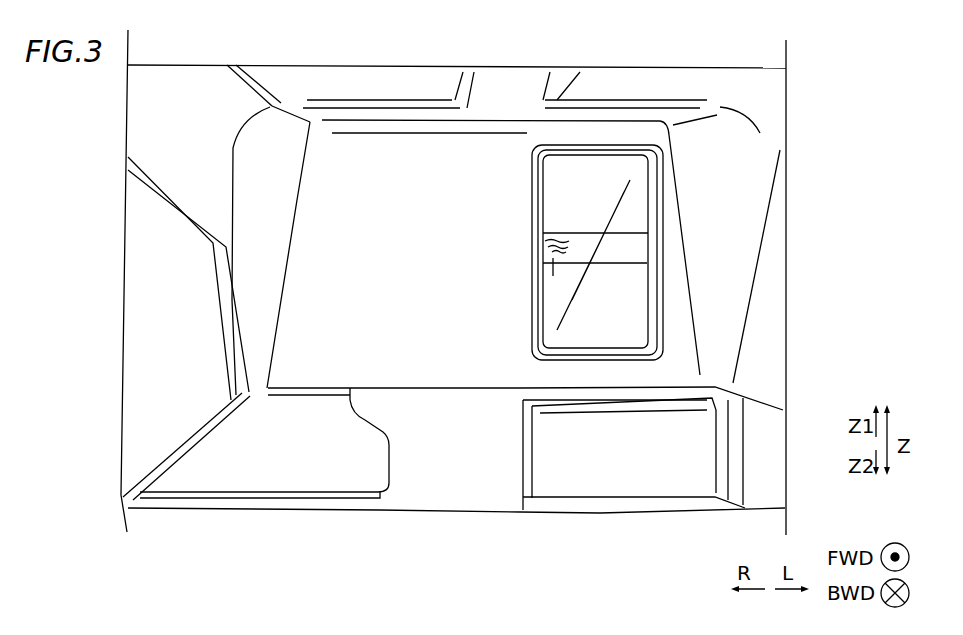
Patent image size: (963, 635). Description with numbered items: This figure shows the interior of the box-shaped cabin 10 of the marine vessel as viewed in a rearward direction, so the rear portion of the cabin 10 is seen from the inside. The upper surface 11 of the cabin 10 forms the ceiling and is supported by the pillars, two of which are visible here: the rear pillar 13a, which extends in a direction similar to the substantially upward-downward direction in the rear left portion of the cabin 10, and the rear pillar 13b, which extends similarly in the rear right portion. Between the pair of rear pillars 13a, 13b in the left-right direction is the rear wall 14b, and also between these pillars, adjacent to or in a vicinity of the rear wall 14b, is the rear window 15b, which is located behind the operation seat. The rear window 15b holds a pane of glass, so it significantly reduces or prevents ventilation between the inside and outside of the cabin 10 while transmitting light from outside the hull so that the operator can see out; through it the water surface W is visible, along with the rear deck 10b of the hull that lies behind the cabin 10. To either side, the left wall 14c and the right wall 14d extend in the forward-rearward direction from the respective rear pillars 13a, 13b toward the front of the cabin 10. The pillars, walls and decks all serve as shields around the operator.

The cabin 10 is at (197, 58).
The upper surface 11 is at (415, 88).
The rear wall 14b is at (432, 253).
The rear pillar 13b is at (268, 216).
The right wall 14d is at (175, 343).
The rear window 15b is at (638, 218).
The water surface W is at (589, 233).
The rear deck 10b is at (553, 264).
The rear pillar 13a is at (720, 250).
The left wall 14c is at (765, 337).